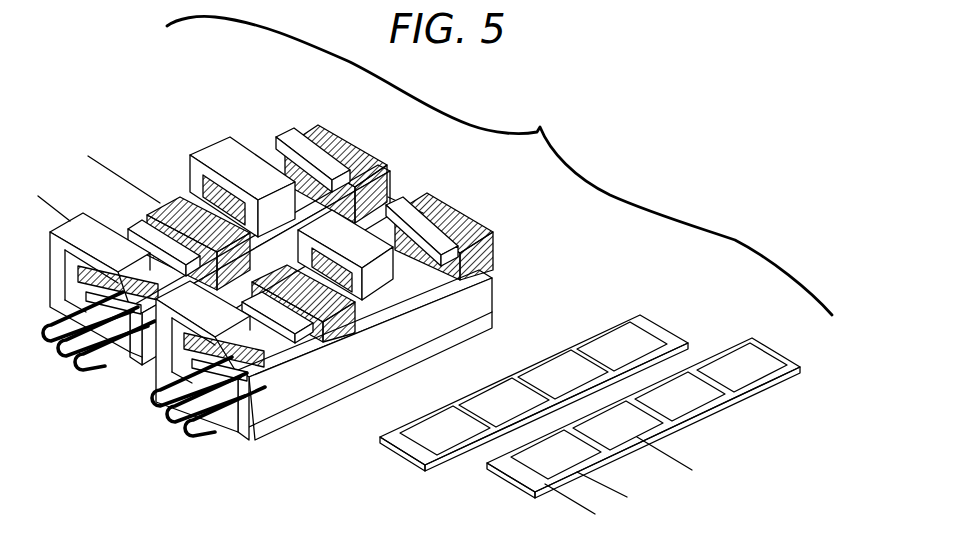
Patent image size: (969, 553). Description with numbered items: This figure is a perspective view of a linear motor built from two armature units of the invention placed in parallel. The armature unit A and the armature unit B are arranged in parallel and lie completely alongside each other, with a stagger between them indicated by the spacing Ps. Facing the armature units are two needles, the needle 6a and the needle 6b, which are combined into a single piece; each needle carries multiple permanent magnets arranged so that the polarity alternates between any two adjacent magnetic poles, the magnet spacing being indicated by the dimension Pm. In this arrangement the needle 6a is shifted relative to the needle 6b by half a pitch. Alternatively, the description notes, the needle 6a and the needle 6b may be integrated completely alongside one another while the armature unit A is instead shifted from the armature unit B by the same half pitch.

The armature unit A is at (365, 143).
The armature unit B is at (475, 214).
The needle 6a is at (641, 318).
The needle 6b is at (752, 343).
The stator unit pitch Ps is at (112, 172).
The magnet pitch Pm is at (669, 458).